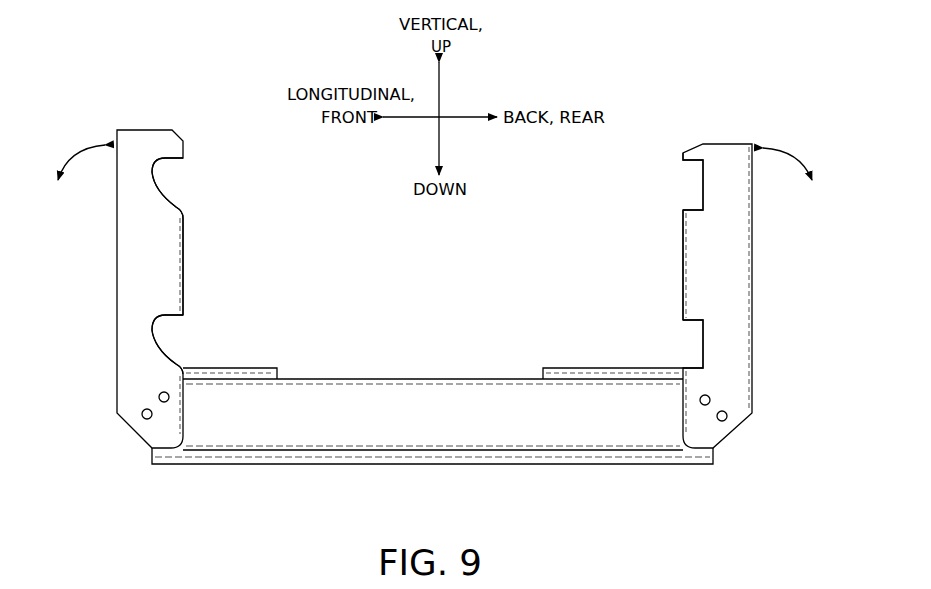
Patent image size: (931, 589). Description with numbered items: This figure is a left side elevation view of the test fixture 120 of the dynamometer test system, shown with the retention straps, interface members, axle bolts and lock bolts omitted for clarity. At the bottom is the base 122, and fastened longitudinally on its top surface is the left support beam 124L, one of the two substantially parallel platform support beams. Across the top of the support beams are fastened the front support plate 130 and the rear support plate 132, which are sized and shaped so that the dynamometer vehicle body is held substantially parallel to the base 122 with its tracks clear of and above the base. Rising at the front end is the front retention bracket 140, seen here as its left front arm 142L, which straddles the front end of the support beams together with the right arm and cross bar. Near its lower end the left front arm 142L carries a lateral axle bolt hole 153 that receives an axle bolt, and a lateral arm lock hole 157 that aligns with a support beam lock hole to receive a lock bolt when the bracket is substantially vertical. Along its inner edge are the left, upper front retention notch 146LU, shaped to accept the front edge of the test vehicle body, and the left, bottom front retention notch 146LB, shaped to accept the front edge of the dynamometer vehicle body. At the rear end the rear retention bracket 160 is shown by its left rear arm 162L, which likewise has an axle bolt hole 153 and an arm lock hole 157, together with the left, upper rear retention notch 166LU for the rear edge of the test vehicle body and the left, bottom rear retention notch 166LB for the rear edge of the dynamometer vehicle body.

The test fixture 120 is at (653, 135).
The base 122 is at (562, 464).
The left support beam 124L is at (462, 429).
The front support plate 130 is at (277, 368).
The rear support plate 132 is at (543, 368).
The front retention bracket 140 is at (147, 130).
The left front arm 142L is at (183, 262).
The left, upper front retention notch 146LU is at (162, 186).
The left, bottom front retention notch 146LB is at (162, 344).
The lateral axle bolt hole 153 is at (147, 419).
The lateral arm lock hole 157 is at (164, 392).
The rear retention bracket 160 is at (718, 143).
The left rear arm 162L is at (683, 262).
The left, upper rear retention notch 166LU is at (701, 190).
The left, bottom rear retention notch 166LB is at (703, 348).